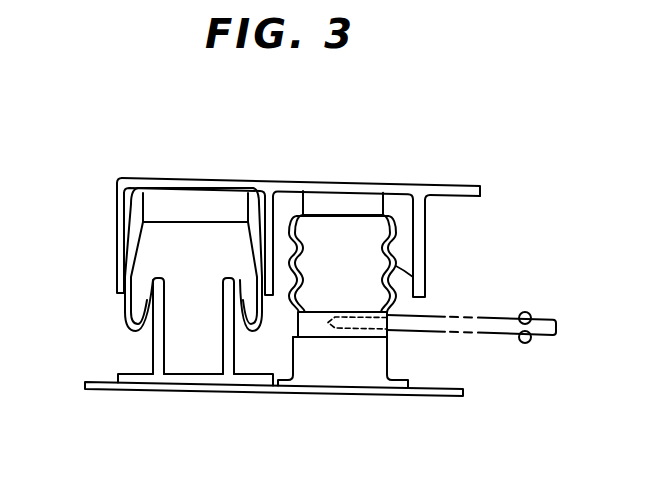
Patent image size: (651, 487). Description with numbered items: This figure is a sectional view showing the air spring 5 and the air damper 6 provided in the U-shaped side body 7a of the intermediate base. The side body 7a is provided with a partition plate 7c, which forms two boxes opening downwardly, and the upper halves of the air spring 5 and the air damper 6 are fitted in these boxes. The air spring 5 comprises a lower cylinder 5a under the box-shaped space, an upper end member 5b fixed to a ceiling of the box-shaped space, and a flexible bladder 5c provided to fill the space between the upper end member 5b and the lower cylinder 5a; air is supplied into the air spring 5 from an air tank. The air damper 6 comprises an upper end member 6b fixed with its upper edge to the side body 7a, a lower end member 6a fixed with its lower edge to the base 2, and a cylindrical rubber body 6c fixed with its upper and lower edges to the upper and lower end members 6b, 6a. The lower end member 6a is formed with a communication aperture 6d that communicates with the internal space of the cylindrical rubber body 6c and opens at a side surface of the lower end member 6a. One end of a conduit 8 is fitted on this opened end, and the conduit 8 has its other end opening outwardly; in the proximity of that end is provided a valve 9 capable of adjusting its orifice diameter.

The base 2 is at (268, 397).
The air spring 5 is at (154, 230).
The lower cylinder 5a is at (153, 346).
The upper end member 5b is at (182, 190).
The flexible bladder 5c is at (124, 313).
The air damper 6 is at (354, 257).
The lower end member 6a is at (392, 338).
The upper end member 6b is at (343, 198).
The cylindrical rubber body 6c is at (425, 283).
The communication aperture 6d is at (332, 322).
The side body 7a is at (278, 181).
The partition plate 7c is at (118, 236).
The conduit 8 is at (432, 333).
The valve 9 is at (521, 313).